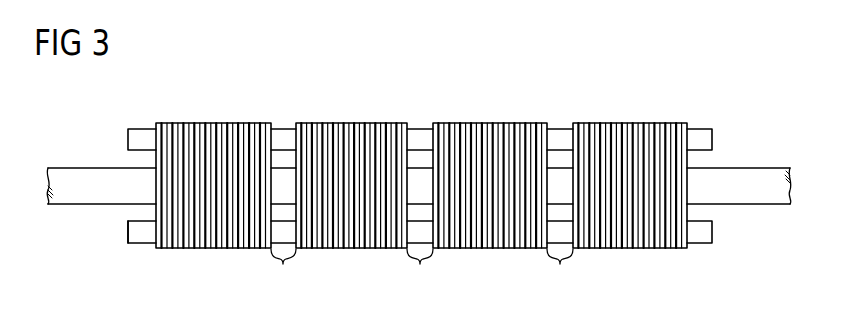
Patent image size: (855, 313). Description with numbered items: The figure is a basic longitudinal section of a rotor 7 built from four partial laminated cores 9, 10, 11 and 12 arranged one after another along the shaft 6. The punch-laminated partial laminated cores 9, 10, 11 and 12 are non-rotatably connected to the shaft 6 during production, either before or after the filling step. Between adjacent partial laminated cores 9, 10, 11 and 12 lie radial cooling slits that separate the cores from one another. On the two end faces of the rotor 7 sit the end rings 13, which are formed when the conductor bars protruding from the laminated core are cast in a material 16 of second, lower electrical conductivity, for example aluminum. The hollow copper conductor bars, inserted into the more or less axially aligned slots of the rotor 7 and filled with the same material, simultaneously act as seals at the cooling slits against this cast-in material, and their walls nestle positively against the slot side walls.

The shaft 6 is at (752, 197).
The rotor 7 is at (740, 127).
The partial laminated core 9 is at (207, 128).
The partial laminated core 10 is at (334, 128).
The partial laminated core 11 is at (472, 128).
The partial laminated core 12 is at (613, 128).
The end ring 13 is at (118, 137).
The material 16 is at (130, 228).